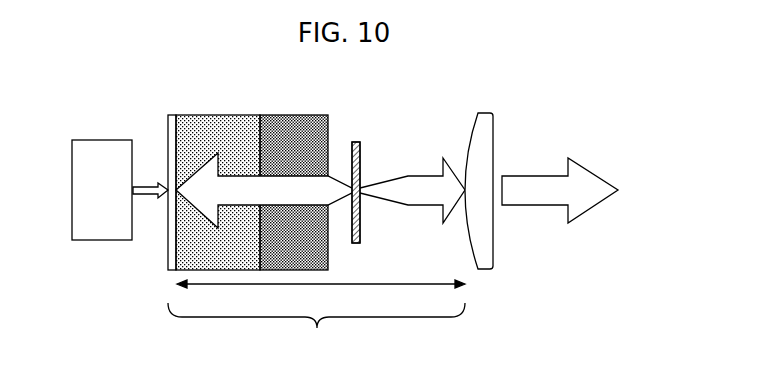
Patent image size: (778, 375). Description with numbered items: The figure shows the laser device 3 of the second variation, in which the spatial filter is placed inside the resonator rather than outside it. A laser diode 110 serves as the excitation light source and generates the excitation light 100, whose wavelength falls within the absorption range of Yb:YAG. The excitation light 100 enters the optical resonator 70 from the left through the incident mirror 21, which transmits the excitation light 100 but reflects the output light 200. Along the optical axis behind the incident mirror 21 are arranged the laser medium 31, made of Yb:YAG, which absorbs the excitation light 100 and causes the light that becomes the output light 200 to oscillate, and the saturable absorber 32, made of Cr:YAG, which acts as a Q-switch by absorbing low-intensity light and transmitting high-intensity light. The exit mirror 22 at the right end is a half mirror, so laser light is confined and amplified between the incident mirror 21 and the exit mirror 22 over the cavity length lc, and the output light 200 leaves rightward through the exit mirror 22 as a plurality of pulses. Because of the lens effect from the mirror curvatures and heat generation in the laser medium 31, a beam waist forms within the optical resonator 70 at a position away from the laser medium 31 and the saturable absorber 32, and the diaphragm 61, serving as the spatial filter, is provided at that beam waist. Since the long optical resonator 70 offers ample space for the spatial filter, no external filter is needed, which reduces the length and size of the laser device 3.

The laser diode 110 is at (96, 140).
The excitation light 100 is at (144, 186).
The incident mirror 21 is at (175, 115).
The laser medium 31 is at (219, 126).
The saturable absorber 32 is at (293, 128).
The diaphragm 61 is at (357, 141).
The exit mirror 22 is at (481, 128).
The output light 200 is at (546, 174).
The optical resonator 70 is at (316, 318).
The laser device 3 is at (445, 356).